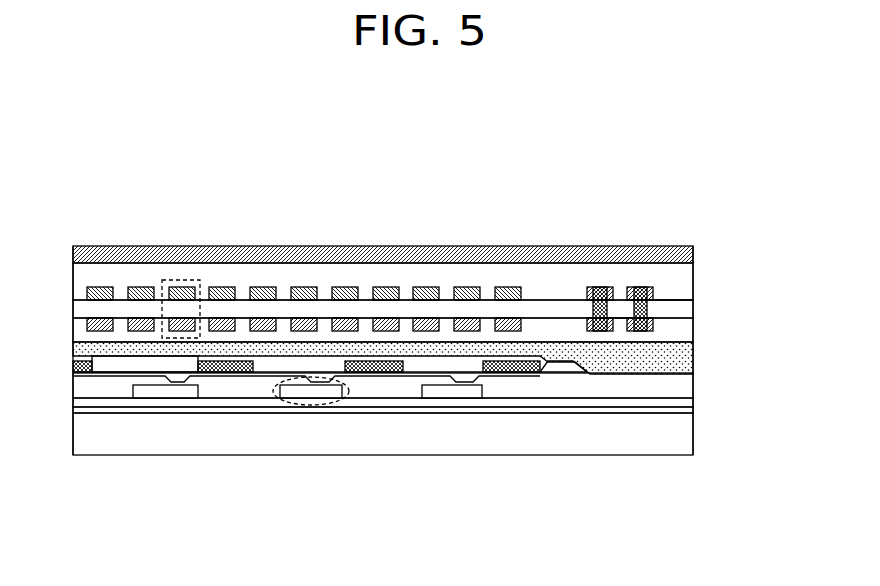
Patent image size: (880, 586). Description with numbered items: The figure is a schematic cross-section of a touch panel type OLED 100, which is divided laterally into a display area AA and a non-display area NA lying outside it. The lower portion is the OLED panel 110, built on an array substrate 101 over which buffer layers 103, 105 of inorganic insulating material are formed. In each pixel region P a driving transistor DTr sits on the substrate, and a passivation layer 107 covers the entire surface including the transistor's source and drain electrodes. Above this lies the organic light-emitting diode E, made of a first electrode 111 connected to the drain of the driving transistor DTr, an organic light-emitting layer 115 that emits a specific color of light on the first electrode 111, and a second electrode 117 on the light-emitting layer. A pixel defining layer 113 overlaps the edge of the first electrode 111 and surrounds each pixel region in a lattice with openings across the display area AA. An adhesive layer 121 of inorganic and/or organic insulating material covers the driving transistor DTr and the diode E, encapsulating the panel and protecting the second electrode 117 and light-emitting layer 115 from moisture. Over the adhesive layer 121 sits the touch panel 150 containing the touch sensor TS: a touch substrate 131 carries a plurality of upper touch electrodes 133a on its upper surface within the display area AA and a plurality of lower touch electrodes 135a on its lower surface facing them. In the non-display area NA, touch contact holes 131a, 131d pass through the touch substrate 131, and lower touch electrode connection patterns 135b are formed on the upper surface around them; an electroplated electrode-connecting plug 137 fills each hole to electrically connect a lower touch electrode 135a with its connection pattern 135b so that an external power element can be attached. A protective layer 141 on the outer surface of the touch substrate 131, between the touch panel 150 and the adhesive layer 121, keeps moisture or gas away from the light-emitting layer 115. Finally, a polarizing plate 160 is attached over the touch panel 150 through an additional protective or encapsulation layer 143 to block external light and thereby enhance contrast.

The touch panel type OLED 100 is at (720, 161).
The array substrate 101 is at (680, 447).
The buffer layer 103 is at (693, 413).
The buffer layer 105 is at (680, 402).
The passivation layer 107 is at (680, 383).
The OLED panel 110 is at (753, 345).
The first electrode 111 is at (203, 373).
The pixel defining layer 113 is at (560, 366).
The organic light-emitting layer 115 is at (224, 375).
The second electrode 117 is at (242, 368).
The adhesive layer 121 is at (683, 362).
The touch substrate 131 is at (647, 312).
The touch contact hole 131a is at (618, 308).
The touch contact hole 131d is at (685, 297).
The upper touch electrode 133a is at (505, 287).
The lower touch electrode 135a is at (497, 320).
The lower touch electrode connection pattern 135b is at (612, 297).
The electrode-connecting plug 137 is at (600, 287).
The protective layer 141 is at (680, 334).
The protective or encapsulation layer 143 is at (680, 275).
The touch panel 150 is at (753, 245).
The polarizing plate 160 is at (693, 253).
The touch sensor TS is at (162, 338).
The organic light-emitting diode E is at (275, 507).
The driving transistor DTr is at (337, 403).
The pixel region P is at (420, 383).
The display area AA is at (539, 212).
The non-display area NA is at (693, 212).